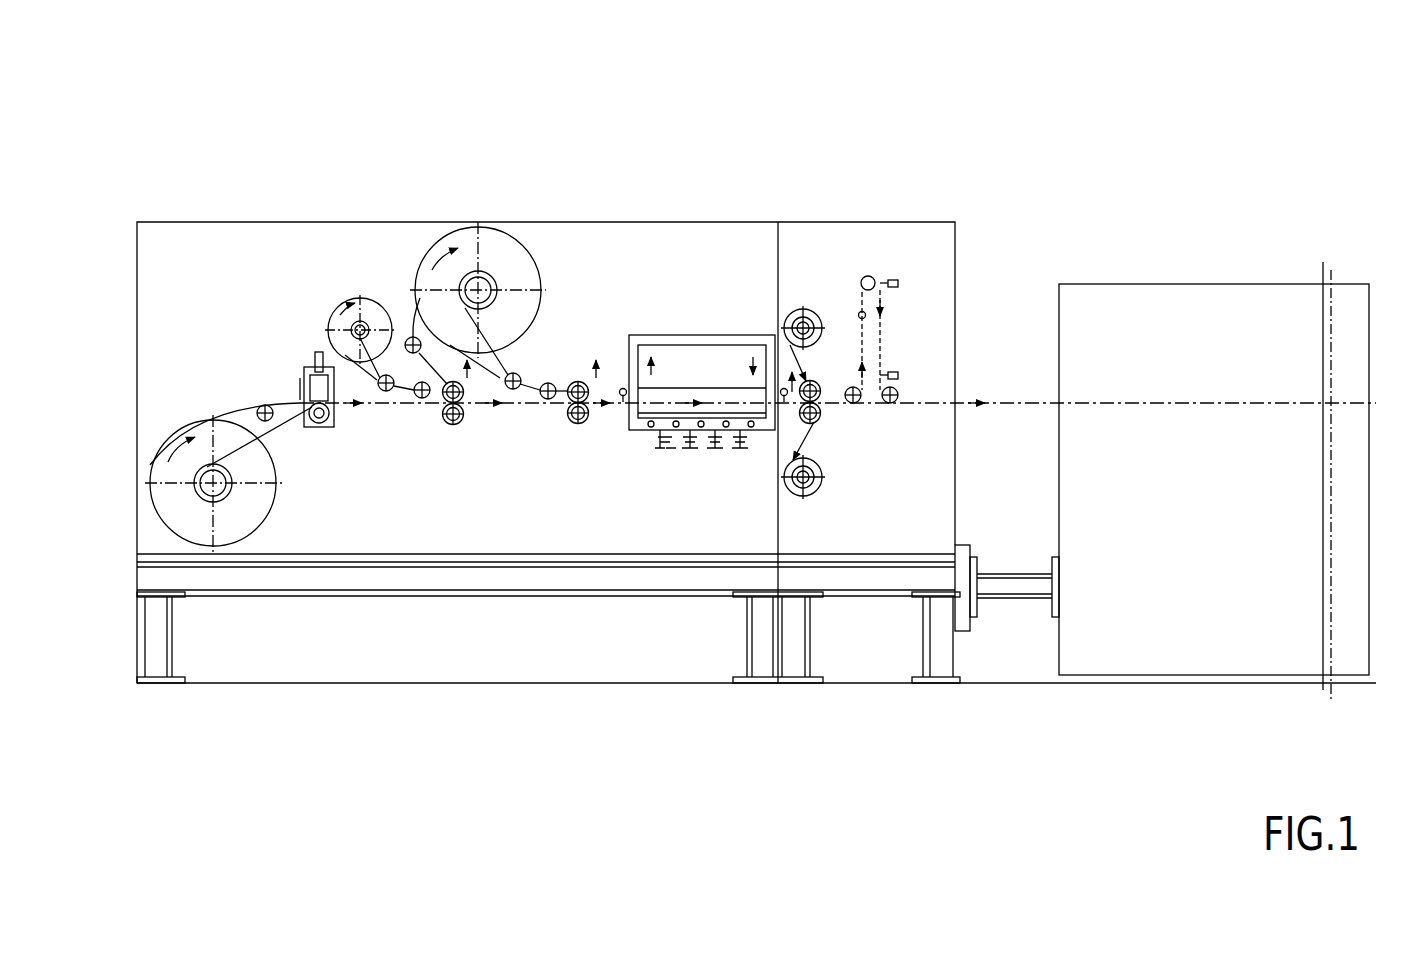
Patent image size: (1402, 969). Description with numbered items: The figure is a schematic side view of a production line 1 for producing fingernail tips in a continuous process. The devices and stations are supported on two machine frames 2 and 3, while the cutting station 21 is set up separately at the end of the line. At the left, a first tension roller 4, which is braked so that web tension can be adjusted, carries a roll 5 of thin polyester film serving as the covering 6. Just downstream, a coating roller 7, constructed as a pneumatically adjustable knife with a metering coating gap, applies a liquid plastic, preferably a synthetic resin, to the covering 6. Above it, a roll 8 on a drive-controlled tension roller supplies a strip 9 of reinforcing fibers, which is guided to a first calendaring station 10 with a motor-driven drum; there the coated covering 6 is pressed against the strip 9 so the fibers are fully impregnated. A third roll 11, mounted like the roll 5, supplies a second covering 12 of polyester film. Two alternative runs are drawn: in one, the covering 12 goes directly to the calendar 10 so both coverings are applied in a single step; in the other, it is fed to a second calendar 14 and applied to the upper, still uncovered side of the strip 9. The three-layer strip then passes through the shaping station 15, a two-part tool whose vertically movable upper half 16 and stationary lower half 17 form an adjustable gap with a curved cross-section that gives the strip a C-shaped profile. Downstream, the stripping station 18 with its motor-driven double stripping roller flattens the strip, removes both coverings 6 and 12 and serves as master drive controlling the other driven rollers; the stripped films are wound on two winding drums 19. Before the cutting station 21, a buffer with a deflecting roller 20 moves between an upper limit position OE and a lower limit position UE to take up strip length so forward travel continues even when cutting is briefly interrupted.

The production line 1 is at (212, 128).
The machine frame 2 is at (155, 648).
The machine frame 3 is at (786, 645).
The first tension roller 4 is at (170, 515).
The roll 5 is at (162, 470).
The covering 6 is at (242, 405).
The coating roller 7 is at (312, 370).
The roll 8 is at (366, 318).
The strip 9 is at (384, 391).
The first calendaring station 10 is at (463, 406).
The third roll 11 is at (497, 255).
The second covering 12 is at (415, 393).
The second calendar 14 is at (582, 382).
The shaping station 15 is at (650, 335).
The upper half 16 is at (680, 362).
The lower half 17 is at (727, 395).
The stripping station 18 is at (819, 388).
The winding drums 19 is at (803, 322).
The deflecting roller 20 is at (869, 276).
The cutting station 21 is at (1225, 333).
The upper limit position OE is at (903, 283).
The lower limit position UE is at (903, 373).